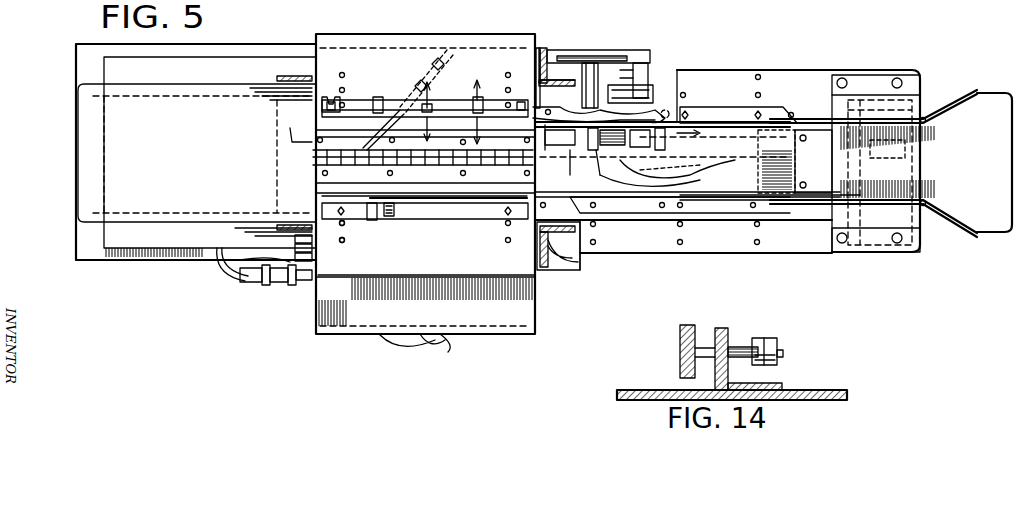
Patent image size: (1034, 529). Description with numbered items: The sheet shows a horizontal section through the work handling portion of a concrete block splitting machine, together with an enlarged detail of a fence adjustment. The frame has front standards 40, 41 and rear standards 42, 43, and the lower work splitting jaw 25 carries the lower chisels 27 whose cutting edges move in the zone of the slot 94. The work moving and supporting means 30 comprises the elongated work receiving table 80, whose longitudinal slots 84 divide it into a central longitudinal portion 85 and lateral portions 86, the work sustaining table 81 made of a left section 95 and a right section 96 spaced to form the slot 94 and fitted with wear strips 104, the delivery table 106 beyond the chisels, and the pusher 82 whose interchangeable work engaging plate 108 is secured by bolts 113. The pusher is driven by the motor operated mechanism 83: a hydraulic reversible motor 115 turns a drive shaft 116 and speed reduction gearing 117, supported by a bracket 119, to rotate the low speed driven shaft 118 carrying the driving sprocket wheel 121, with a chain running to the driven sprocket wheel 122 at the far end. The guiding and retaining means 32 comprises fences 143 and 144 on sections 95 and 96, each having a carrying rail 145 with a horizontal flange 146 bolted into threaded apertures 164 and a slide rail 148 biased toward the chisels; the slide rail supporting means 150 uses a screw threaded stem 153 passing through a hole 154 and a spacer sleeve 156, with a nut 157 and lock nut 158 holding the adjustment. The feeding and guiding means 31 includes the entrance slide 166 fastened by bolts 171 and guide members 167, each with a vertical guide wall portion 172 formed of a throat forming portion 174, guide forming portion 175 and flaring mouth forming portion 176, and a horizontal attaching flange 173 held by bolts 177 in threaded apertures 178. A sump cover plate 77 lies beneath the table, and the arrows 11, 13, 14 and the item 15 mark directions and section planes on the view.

In FIG. 5, the delivery table 106 is at (86, 134).
In FIG. 5, the front standard 40 is at (277, 79).
In FIG. 5, the front standard 41 is at (278, 232).
In FIG. 5, the wear strips 104 is at (312, 152).
In FIG. 5, the member 15 is at (586, 140).
In FIG. 5, the lower work splitting jaw 25 is at (322, 158).
In FIG. 5, the right section of sustaining table 96 is at (362, 42).
In FIG. 14, the right section of sustaining table 96 is at (855, 398).
In FIG. 5, the work sustaining table 81 is at (325, 42).
In FIG. 5, the guiding and retaining means 32 is at (342, 71).
In FIG. 5, the fence 144 is at (392, 71).
In FIG. 5, the direction arrow 14 is at (437, 115).
In FIG. 5, the direction arrow 13 is at (488, 115).
In FIG. 5, the slot 94 is at (522, 168).
In FIG. 5, the lower chisels 27 is at (423, 167).
In FIG. 5, the direction indicator 11 is at (602, 138).
In FIG. 5, the slide rail 148 is at (455, 200).
In FIG. 5, the fence 143 is at (412, 206).
In FIG. 5, the carrying rail 145 is at (425, 214).
In FIG. 5, the screw threaded apertures 164 is at (342, 226).
In FIG. 5, the left section of sustaining table 95 is at (370, 270).
In FIG. 5, the sump cover plate 77 is at (484, 318).
In FIG. 5, the rear standard 42 is at (524, 52).
In FIG. 5, the low speed driven shaft 118 is at (596, 63).
In FIG. 5, the bracket 119 is at (542, 50).
In FIG. 5, the speed reduction gearing 117 is at (607, 66).
In FIG. 5, the drive shaft 116 is at (640, 63).
In FIG. 5, the motor operated mechanism 83 is at (655, 88).
In FIG. 5, the hydraulically operated reversible motor 115 is at (675, 88).
In FIG. 5, the driving sprocket wheel 121 is at (612, 195).
In FIG. 5, the slots 84 is at (748, 190).
In FIG. 5, the throat forming portion 174 is at (720, 205).
In FIG. 5, the lateral portions 86 is at (712, 72).
In FIG. 5, the work receiving table 80 is at (774, 78).
In FIG. 5, the work engaging plate 108 is at (762, 125).
In FIG. 5, the work moving and supporting means 30 is at (812, 125).
In FIG. 5, the bolts 113 is at (820, 184).
In FIG. 5, the pusher 82 is at (816, 192).
In FIG. 5, the central longitudinal portion 85 is at (720, 182).
In FIG. 5, the bolts 177 is at (680, 207).
In FIG. 5, the screw threaded apertures 178 is at (682, 244).
In FIG. 5, the horizontal attaching flange 173 is at (758, 215).
In FIG. 5, the guide forming portion 175 is at (830, 207).
In FIG. 5, the rear standard 43 is at (562, 258).
In FIG. 5, the feeding and guiding means 31 is at (925, 118).
In FIG. 5, the bolts 171 is at (895, 78).
In FIG. 5, the driven sprocket wheel 122 is at (895, 152).
In FIG. 5, the guide members 167 is at (975, 90).
In FIG. 5, the entrance slide 166 is at (1002, 93).
In FIG. 5, the vertical guide wall portion 172 is at (927, 122).
In FIG. 5, the mouth forming portion 176 is at (955, 222).
In FIG. 14, the hole 154 is at (700, 330).
In FIG. 14, the horizontal flange 146 is at (782, 386).
In FIG. 14, the screw threaded stem 153 is at (690, 375).
In FIG. 14, the slide rail supporting means 150 is at (760, 345).
In FIG. 14, the spacer sleeve 156 is at (762, 338).
In FIG. 14, the nut 157 is at (775, 365).
In FIG. 14, the lock nut 158 is at (780, 350).